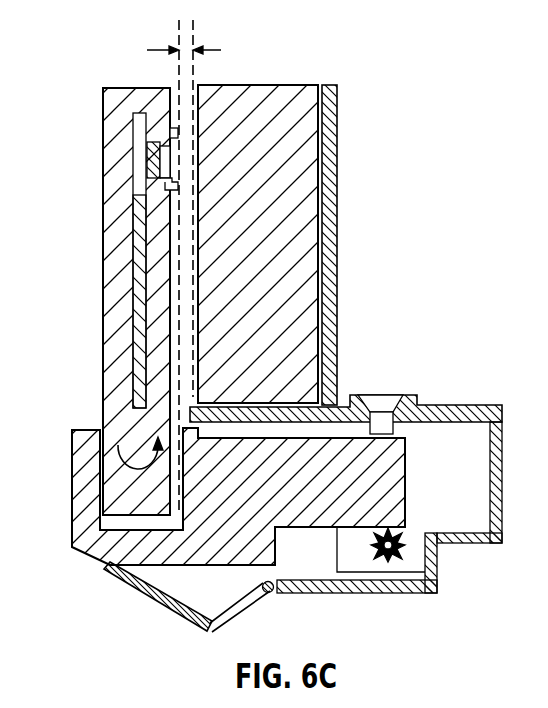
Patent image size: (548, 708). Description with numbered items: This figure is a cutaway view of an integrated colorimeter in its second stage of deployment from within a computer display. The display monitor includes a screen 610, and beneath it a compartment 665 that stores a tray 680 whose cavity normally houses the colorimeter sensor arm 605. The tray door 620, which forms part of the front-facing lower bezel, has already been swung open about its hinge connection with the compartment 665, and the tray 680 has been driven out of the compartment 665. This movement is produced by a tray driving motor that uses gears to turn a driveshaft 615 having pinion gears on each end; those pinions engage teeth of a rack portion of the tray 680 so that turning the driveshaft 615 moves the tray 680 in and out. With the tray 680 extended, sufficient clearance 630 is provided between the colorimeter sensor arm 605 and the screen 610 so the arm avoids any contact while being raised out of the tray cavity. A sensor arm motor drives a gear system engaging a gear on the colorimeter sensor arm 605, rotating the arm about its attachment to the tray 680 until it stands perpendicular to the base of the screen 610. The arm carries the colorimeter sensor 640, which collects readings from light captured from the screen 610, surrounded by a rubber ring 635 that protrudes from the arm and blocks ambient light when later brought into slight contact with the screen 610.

The integrated colorimeter sensor arm 605 is at (102, 402).
The screen 610 is at (292, 285).
The driveshaft 615 is at (400, 548).
The tray door 620 is at (122, 585).
The clearance 630 is at (168, 48).
The rubber ring 635 is at (174, 185).
The colorimeter sensor 640 is at (136, 158).
The compartment 665 is at (435, 410).
The tray 680 is at (388, 482).